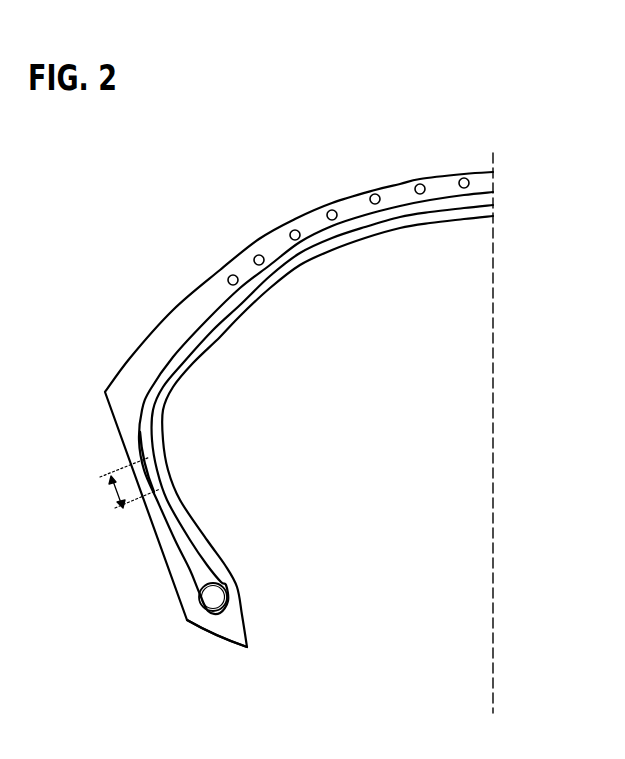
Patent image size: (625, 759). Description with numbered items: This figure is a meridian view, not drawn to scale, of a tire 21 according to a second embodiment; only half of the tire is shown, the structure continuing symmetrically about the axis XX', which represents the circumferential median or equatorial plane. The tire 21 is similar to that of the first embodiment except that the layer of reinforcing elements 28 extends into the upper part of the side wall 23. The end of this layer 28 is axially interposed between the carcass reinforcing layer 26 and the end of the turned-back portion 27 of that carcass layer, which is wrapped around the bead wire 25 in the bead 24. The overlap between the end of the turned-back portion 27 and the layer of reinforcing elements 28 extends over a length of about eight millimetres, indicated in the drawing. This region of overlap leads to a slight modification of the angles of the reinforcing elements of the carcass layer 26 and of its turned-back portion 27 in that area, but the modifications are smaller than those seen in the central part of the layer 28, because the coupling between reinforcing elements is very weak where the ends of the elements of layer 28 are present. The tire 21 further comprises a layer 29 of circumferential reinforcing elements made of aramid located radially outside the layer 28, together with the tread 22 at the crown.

The tire 21 is at (421, 91).
The tread 22 is at (359, 189).
The side wall 23 is at (164, 484).
The bead 24 is at (242, 593).
The bead wire 25 is at (212, 596).
The carcass reinforcing layer 26 is at (188, 529).
The turned-back portion 27 is at (150, 515).
The layer of reinforcing elements 28 is at (307, 243).
The layer of circumferential reinforcing elements 29 is at (256, 257).